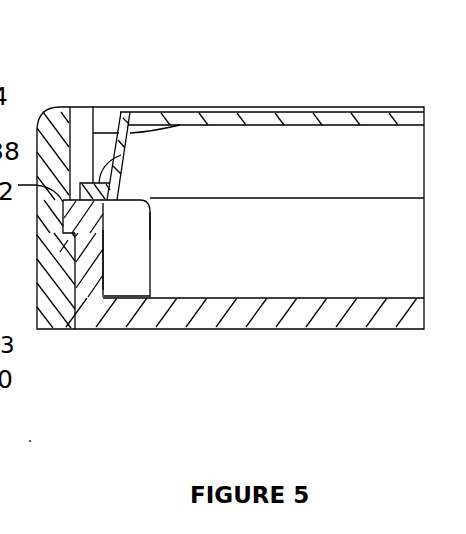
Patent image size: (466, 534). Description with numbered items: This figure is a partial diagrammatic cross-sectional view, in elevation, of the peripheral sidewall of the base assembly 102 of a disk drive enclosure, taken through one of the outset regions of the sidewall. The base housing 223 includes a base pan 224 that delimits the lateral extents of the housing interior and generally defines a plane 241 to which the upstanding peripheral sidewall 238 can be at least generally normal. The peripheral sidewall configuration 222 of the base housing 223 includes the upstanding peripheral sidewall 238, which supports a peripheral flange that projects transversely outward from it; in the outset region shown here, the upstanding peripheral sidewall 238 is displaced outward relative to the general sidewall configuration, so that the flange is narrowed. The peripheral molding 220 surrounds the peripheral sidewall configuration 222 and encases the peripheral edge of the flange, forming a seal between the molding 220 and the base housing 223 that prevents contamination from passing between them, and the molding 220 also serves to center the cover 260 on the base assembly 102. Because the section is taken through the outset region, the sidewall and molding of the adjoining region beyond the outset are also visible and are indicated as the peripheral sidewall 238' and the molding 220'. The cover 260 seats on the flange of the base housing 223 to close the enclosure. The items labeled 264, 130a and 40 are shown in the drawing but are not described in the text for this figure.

The base assembly 102 is at (108, 108).
The peripheral molding 220 is at (84, 135).
The molding in adjoining region 220' is at (265, 133).
The seal 264 is at (120, 153).
The cover 260 is at (320, 128).
The peripheral sidewall configuration 222 is at (105, 225).
The upstanding peripheral sidewall 238 is at (159, 260).
The peripheral sidewall in adjoining region 238' is at (168, 287).
The chamber 130a is at (276, 297).
The base housing 223 is at (62, 233).
The base pan 224 is at (198, 332).
The wall 40 is at (70, 238).
The plane 241 is at (19, 446).